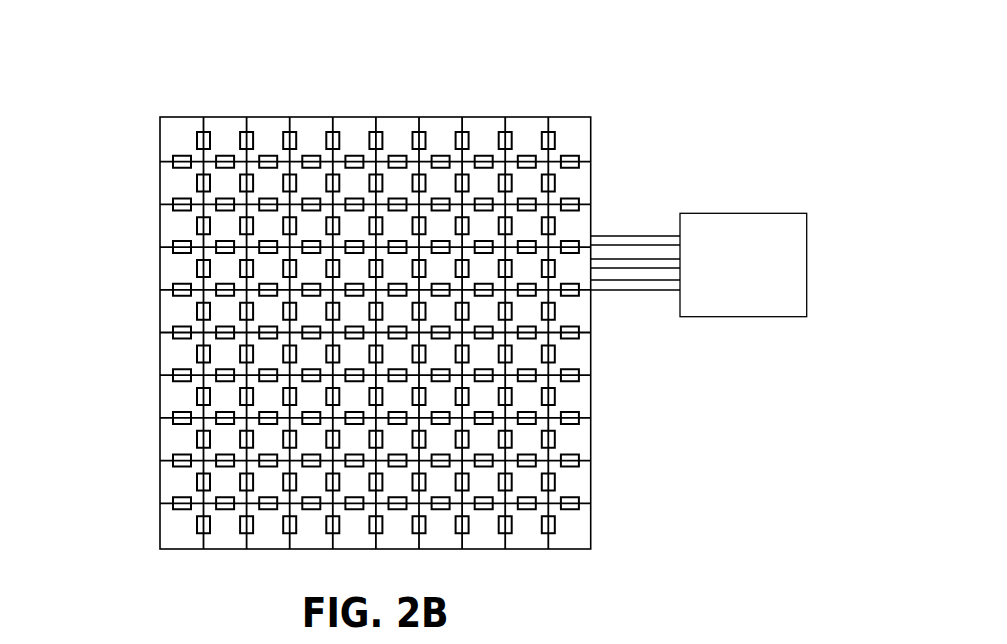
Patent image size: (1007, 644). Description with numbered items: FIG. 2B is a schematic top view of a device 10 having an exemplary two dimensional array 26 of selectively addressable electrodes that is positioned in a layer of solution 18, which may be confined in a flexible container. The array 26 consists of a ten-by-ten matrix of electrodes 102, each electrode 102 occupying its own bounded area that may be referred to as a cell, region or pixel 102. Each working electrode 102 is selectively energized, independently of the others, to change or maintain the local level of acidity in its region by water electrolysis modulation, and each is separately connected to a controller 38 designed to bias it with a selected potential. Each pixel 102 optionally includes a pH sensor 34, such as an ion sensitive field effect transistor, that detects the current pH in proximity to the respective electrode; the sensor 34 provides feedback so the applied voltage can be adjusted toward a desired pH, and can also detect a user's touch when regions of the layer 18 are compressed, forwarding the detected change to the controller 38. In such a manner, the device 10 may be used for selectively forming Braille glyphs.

The device 10 is at (347, 105).
The electrode 102 is at (182, 142).
The pH sensor 34 is at (422, 138).
The layer of solution 18 is at (565, 130).
The two dimensional array 26 is at (163, 205).
The controller 38 is at (808, 263).